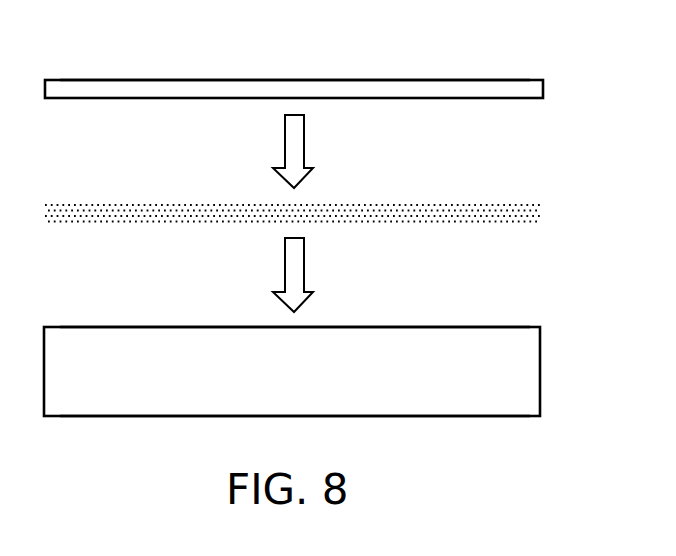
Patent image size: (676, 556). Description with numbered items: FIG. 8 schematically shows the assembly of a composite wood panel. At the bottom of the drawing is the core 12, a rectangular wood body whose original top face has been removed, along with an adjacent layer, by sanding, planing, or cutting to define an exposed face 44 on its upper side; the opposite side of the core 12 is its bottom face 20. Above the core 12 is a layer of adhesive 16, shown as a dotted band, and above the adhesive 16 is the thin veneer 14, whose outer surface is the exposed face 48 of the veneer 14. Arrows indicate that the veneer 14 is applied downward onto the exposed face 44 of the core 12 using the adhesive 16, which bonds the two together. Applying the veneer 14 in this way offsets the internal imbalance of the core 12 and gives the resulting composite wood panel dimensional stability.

The core 12 is at (543, 362).
The veneer 14 is at (543, 80).
The adhesive 16 is at (540, 205).
The bottom face 20 is at (503, 416).
The exposed face 44 is at (520, 327).
The exposed face of the veneer 48 is at (422, 78).